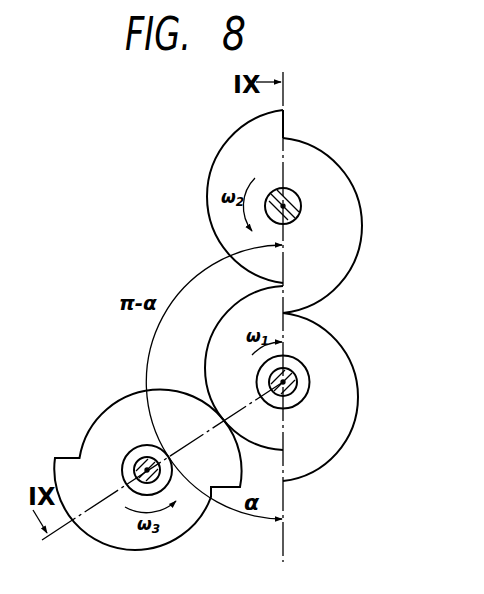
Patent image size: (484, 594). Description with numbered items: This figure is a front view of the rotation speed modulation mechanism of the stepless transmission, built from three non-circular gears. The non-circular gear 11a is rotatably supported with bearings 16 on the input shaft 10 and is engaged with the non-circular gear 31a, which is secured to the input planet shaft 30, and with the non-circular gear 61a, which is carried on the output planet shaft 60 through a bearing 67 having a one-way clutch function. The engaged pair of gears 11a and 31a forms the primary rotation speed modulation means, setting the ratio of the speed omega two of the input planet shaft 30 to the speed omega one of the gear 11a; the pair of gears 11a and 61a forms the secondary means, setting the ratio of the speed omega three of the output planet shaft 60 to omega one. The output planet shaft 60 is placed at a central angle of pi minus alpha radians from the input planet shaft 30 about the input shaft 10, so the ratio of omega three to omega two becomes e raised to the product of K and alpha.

The input shaft 10 is at (295, 376).
The non-circular gear 11a is at (343, 377).
The bearings 16 is at (308, 396).
The input planet shaft 30 is at (297, 194).
The non-circular gear 31a is at (347, 202).
The output planet shaft 60 is at (137, 453).
The non-circular gear 61a is at (103, 423).
The bearing having a one-way clutch function 67 is at (122, 460).